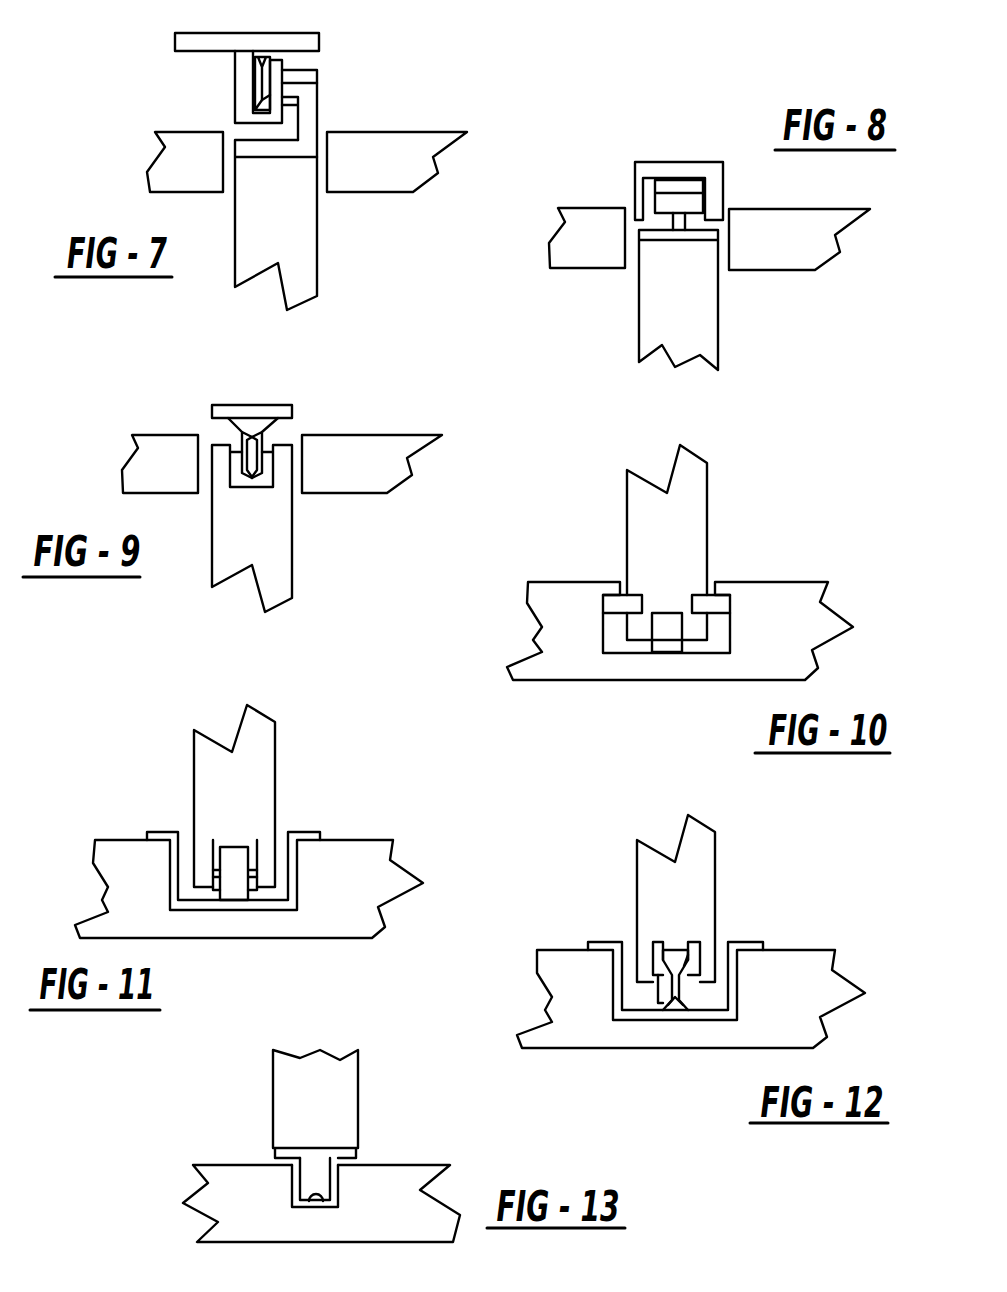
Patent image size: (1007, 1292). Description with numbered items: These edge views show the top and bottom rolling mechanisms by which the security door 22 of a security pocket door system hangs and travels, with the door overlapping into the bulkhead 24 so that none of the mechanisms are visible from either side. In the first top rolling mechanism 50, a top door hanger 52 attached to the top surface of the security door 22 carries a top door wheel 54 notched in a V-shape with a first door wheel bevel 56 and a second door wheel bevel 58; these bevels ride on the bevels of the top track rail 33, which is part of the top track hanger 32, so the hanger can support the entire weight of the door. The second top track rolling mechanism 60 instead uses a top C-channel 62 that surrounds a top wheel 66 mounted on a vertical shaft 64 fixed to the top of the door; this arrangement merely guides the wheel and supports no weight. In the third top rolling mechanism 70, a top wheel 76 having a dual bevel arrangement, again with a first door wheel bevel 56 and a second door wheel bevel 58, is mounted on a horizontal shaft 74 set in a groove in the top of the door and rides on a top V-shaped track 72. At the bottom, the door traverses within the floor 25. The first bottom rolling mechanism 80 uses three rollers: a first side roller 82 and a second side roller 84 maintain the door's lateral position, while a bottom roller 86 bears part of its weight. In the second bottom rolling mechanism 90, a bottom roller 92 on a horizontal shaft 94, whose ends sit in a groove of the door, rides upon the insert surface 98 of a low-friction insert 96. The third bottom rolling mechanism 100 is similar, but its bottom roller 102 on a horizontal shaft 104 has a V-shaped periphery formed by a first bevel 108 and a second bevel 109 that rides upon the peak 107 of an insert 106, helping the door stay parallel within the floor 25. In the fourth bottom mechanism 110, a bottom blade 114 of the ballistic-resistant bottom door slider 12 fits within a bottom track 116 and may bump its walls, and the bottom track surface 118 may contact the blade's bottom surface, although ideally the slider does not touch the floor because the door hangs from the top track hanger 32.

In FIG. 13, the plate 12 is at (357, 1153).
In FIG. 7, the security door 22 is at (317, 223).
In FIG. 8, the security door 22 is at (720, 310).
In FIG. 9, the security door 22 is at (292, 560).
In FIG. 10, the security door 22 is at (713, 480).
In FIG. 11, the security door 22 is at (275, 750).
In FIG. 12, the security door 22 is at (715, 850).
In FIG. 13, the security door 22 is at (358, 1073).
In FIG. 7, the bulkhead 24 is at (167, 132).
In FIG. 8, the bulkhead 24 is at (800, 210).
In FIG. 9, the bulkhead 24 is at (157, 435).
In FIG. 10, the floor 25 is at (803, 582).
In FIG. 11, the floor 25 is at (393, 840).
In FIG. 12, the floor 25 is at (815, 950).
In FIG. 13, the floor 25 is at (452, 1165).
In FIG. 7, the top track hanger 32 is at (197, 33).
In FIG. 7, the top track rail 33 is at (273, 107).
In FIG. 7, the first top rolling mechanism 50 is at (362, 72).
In FIG. 7, the top door hanger 52 is at (318, 108).
In FIG. 7, the top door wheel 54 is at (285, 83).
In FIG. 7, the first door wheel bevel 56 is at (268, 60).
In FIG. 9, the first door wheel bevel 56 is at (247, 477).
In FIG. 7, the second door wheel bevel 58 is at (273, 60).
In FIG. 9, the second door wheel bevel 58 is at (258, 477).
In FIG. 8, the second top track rolling mechanism 60 is at (667, 124).
In FIG. 8, the top C-channel 62 is at (637, 162).
In FIG. 8, the vertical shaft 64 is at (673, 223).
In FIG. 8, the top wheel 66 is at (692, 188).
In FIG. 9, the third top rolling mechanism 70 is at (295, 388).
In FIG. 9, the top V-shaped track 72 is at (230, 405).
In FIG. 9, the horizontal shaft 74 is at (230, 438).
In FIG. 9, the top wheel 76 is at (268, 437).
In FIG. 10, the connector assembly 80 is at (795, 499).
In FIG. 10, the first side roller 82 is at (637, 593).
In FIG. 10, the second side roller 84 is at (710, 593).
In FIG. 10, the bottom roller 86 is at (682, 627).
In FIG. 11, the second bottom rolling mechanism 90 is at (110, 751).
In FIG. 11, the bottom roller 92 is at (247, 853).
In FIG. 11, the horizontal shaft 94 is at (253, 887).
In FIG. 11, the insert 96 is at (320, 830).
In FIG. 11, the insert surface 98 is at (193, 892).
In FIG. 12, the third bottom rolling mechanism 100 is at (803, 898).
In FIG. 12, the bottom roller 102 is at (685, 963).
In FIG. 12, the horizontal shaft 104 is at (672, 997).
In FIG. 12, the insert 106 is at (600, 942).
In FIG. 12, the peak 107 is at (677, 1000).
In FIG. 12, the first bevel 108 is at (672, 957).
In FIG. 12, the second bevel 109 is at (683, 957).
In FIG. 13, the fourth bottom mechanism 110 is at (187, 1121).
In FIG. 13, the bottom blade 114 is at (300, 1182).
In FIG. 13, the bottom track 116 is at (343, 1190).
In FIG. 13, the bottom track surface 118 is at (315, 1200).